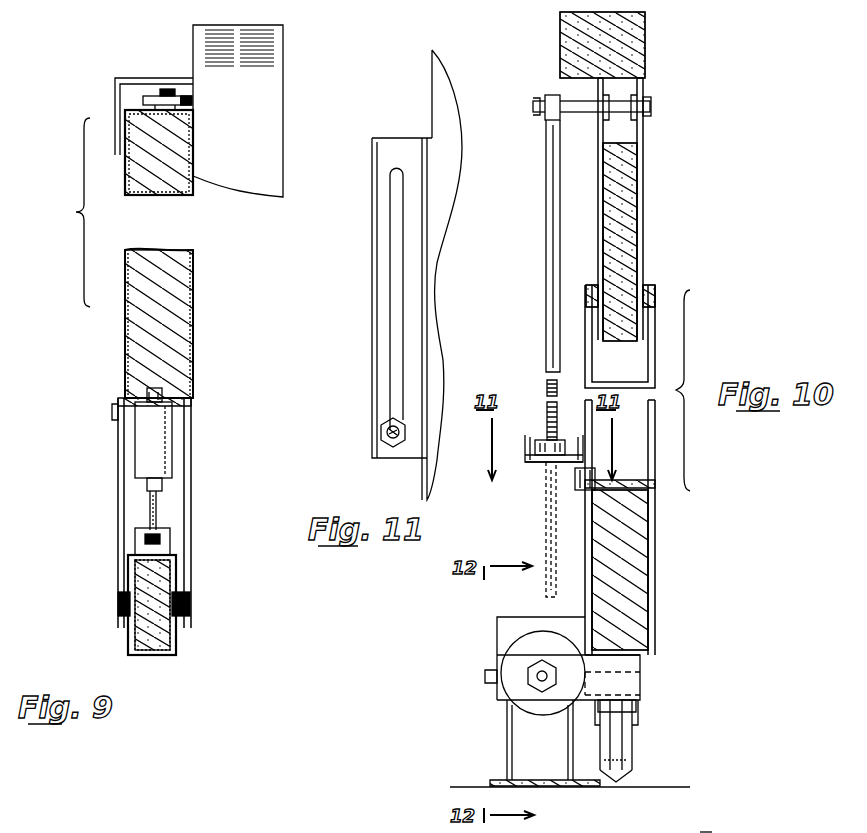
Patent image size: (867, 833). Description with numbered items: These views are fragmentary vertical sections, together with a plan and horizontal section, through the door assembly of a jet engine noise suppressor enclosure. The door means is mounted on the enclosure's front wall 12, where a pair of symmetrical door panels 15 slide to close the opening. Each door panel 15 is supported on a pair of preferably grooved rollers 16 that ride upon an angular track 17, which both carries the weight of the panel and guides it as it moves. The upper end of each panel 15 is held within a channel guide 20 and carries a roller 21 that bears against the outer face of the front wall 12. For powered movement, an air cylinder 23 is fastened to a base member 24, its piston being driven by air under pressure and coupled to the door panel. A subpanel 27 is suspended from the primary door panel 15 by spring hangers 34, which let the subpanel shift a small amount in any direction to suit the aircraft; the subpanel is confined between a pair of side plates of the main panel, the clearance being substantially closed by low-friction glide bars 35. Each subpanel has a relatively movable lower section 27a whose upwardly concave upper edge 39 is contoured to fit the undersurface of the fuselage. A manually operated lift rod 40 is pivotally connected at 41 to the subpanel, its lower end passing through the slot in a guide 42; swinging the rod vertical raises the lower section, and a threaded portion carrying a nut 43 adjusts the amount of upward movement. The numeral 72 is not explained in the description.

In FIG. 9, the front wall 12 is at (250, 163).
In FIG. 9, the door panel 15 is at (125, 322).
In FIG. 10, the door panel 15 is at (625, 586).
In FIG. 10, the roller 16 is at (625, 758).
In FIG. 10, the angular track 17 is at (628, 782).
In FIG. 9, the channel guide 20 is at (116, 90).
In FIG. 9, the roller 21 is at (190, 100).
In FIG. 10, the air cylinder 23 is at (522, 646).
In FIG. 10, the base member 24 is at (507, 748).
In FIG. 9, the subpanel 27 is at (190, 612).
In FIG. 9, the lower section 27a is at (160, 640).
In FIG. 10, the lower section 27a is at (620, 198).
In FIG. 9, the spring hanger 34 is at (147, 443).
In FIG. 9, the glide bar 35 is at (118, 600).
In FIG. 10, the glide bar 35 is at (590, 282).
In FIG. 10, the upper edge 39 is at (645, 12).
In FIG. 11, the lift rod 40 is at (384, 433).
In FIG. 10, the lift rod 40 is at (546, 262).
In FIG. 10, the pivotal connection 41 is at (545, 106).
In FIG. 11, the guide 42 is at (372, 326).
In FIG. 10, the guide 42 is at (525, 460).
In FIG. 11, the nut 43 is at (387, 425).
In FIG. 10, the nut 43 is at (540, 445).
In FIG. 10, the guide member 72 is at (676, 832).